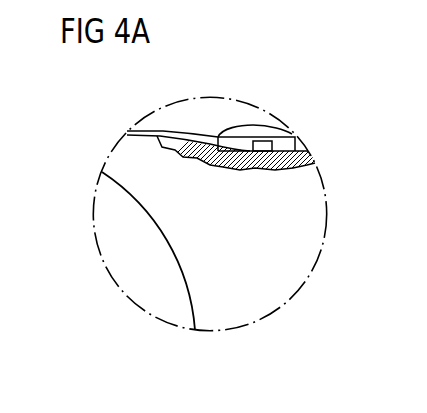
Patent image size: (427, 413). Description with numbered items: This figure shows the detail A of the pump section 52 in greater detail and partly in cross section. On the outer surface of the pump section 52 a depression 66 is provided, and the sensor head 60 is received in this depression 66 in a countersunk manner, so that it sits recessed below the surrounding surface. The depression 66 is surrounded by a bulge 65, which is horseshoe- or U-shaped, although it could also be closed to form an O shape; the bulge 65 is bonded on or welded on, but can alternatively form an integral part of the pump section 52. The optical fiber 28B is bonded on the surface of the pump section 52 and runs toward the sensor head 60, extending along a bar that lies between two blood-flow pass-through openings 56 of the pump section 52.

The optical fiber 28B is at (150, 130).
The pump section 52 is at (312, 111).
The blood-flow pass-through opening 56 is at (106, 244).
The sensor head 60 is at (268, 152).
The bulge 65 is at (260, 130).
The depression 66 is at (237, 164).
The detail A is at (312, 270).